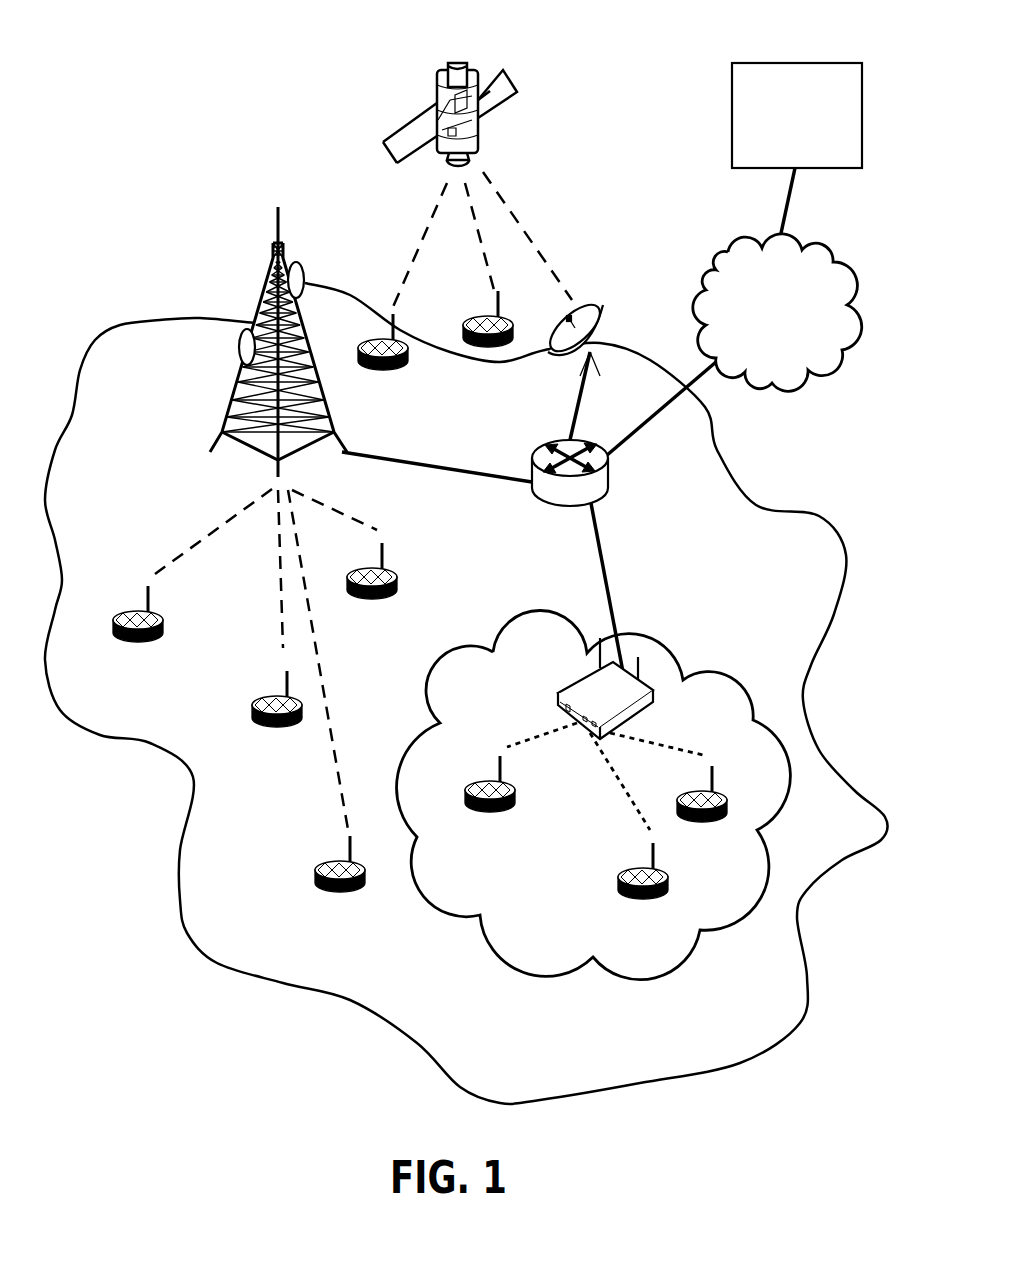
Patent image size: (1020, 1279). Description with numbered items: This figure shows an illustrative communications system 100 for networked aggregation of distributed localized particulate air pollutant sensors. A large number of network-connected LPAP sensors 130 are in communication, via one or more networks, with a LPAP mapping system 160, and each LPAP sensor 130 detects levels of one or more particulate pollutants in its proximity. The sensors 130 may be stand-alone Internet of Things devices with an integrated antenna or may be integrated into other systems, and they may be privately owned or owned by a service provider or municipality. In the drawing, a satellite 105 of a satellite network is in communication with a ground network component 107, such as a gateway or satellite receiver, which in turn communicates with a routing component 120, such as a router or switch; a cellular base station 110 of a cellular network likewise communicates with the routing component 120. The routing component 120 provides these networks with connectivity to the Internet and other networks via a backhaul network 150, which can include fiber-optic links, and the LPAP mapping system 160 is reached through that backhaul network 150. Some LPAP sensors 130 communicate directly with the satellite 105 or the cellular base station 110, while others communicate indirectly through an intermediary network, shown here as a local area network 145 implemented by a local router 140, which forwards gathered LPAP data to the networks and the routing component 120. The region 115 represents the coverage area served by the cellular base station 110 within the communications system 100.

The communications system 100 is at (175, 66).
The satellite 105 is at (436, 96).
The ground network component 107 is at (605, 309).
The cellular base station 110 is at (263, 285).
The coverage area 115 is at (127, 380).
The routing component 120 is at (558, 440).
The LPAP sensor 130 is at (400, 583).
The local router 140 is at (582, 683).
The local area network 145 is at (532, 920).
The backhaul network 150 is at (767, 349).
The LPAP mapping system 160 is at (782, 129).